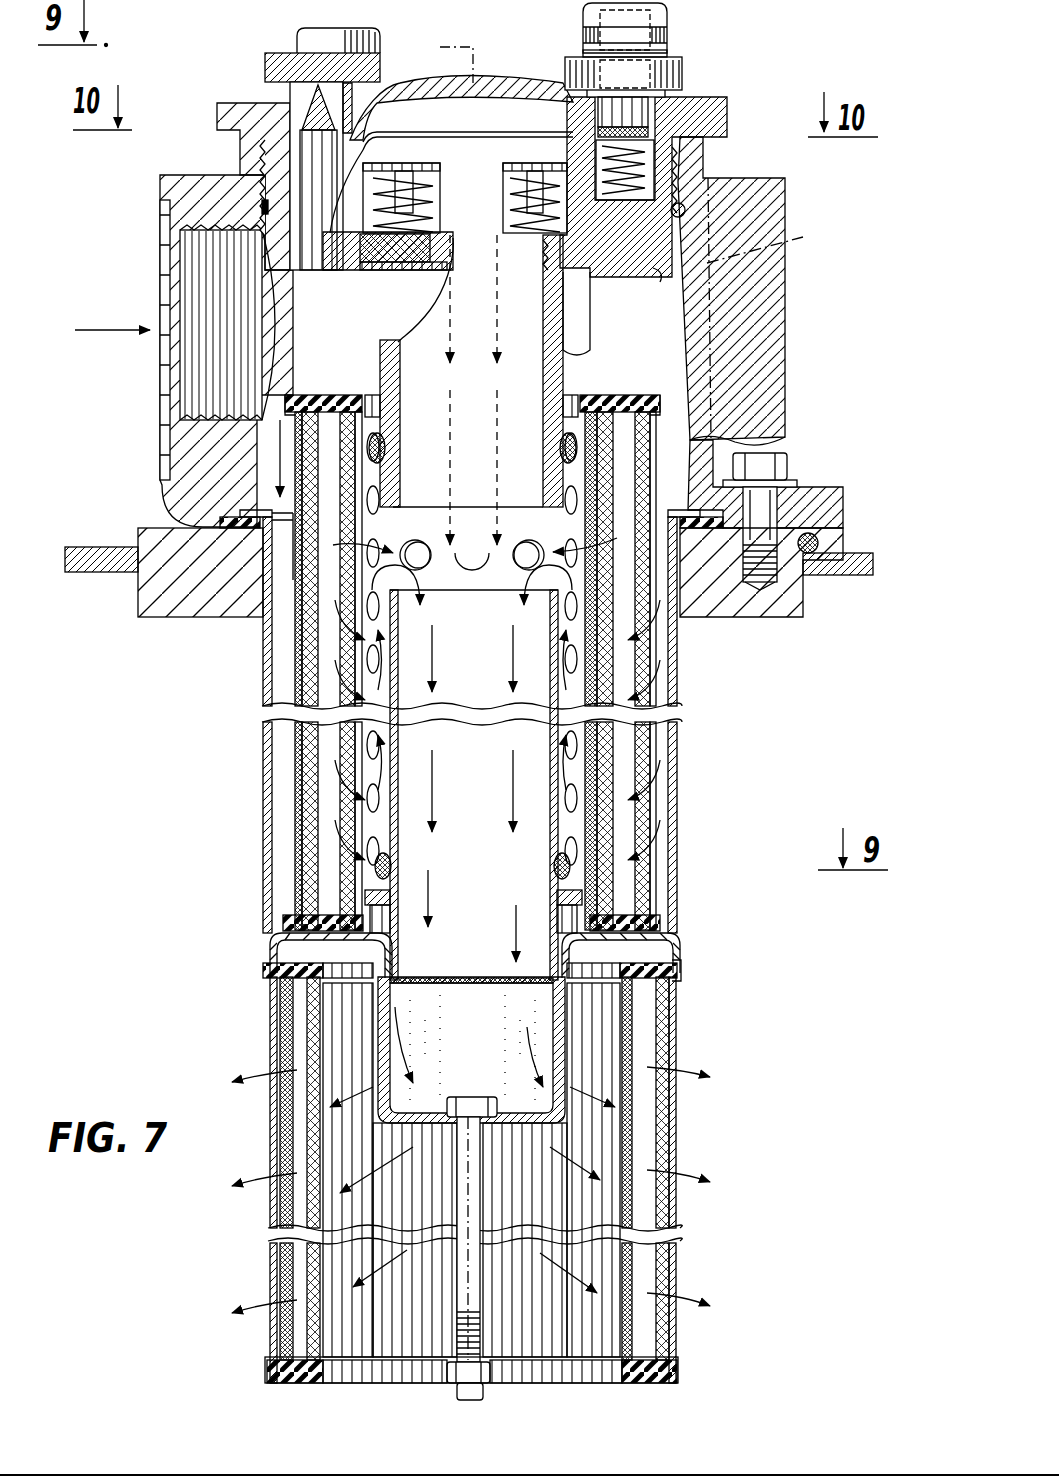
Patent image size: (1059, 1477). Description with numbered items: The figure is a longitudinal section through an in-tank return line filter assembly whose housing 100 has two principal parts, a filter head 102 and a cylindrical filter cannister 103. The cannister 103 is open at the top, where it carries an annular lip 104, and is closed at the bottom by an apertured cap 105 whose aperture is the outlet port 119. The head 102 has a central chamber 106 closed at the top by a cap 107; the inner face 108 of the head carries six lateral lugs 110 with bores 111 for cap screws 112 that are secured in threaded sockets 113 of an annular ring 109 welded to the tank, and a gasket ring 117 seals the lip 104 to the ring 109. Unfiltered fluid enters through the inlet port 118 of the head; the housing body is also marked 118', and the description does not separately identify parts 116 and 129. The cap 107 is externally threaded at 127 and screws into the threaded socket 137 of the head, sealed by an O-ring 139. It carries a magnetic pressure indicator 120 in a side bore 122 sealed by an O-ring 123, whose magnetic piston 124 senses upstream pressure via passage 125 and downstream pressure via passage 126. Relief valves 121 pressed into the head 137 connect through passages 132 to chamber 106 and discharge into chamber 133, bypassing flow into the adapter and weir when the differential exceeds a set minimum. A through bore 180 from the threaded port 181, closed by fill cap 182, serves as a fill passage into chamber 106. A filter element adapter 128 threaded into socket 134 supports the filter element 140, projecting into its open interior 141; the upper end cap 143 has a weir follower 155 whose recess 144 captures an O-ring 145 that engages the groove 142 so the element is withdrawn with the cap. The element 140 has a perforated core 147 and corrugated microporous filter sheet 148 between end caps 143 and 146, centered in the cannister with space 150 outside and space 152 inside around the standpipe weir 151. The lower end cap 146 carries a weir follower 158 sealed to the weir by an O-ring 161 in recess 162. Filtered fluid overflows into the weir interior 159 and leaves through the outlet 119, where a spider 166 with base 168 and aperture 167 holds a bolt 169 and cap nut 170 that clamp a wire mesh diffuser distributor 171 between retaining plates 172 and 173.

The housing 100 is at (150, 217).
The filter head 102 is at (780, 309).
The filter cannister 103 is at (263, 880).
The annular flange or lip 104 is at (235, 520).
The apertured cap 105 is at (272, 950).
The central chamber 106 is at (398, 270).
The cap 107 is at (240, 103).
The inner face 108 is at (797, 545).
The annular ring 109 is at (160, 612).
The lateral lugs 110 is at (765, 488).
The bores 111 is at (768, 518).
The cap screws 112 is at (755, 478).
The threaded sockets 113 is at (770, 583).
The gasket 116 is at (645, 958).
The gasket ring 117 is at (237, 530).
The inlet port 118 is at (172, 322).
The housing body 118' is at (781, 332).
The outlet port 119 is at (471, 1050).
The magnetic pressure indicator 120 is at (672, 18).
The relief valves 121 is at (498, 163).
The side bore 122 is at (595, 150).
The O-ring seal 123 is at (680, 95).
The magnetic piston 124 is at (547, 83).
The passage 125 is at (653, 268).
The passage 126 is at (630, 237).
The external thread 127 is at (267, 172).
The filter element adapter 128 is at (563, 355).
The annular chamber 129 is at (578, 282).
The passages 132 is at (413, 268).
The chamber 133 is at (495, 203).
The socket 134 is at (528, 272).
The threaded socket 137 is at (672, 172).
The O-ring seal 139 is at (683, 210).
The filter element 140 is at (652, 843).
The open interior 141 is at (492, 538).
The external recess 142 is at (545, 555).
The end cap 143 is at (345, 395).
The recess 144 is at (383, 470).
The O-ring 145 is at (387, 452).
The end cap 146 is at (660, 922).
The perforated core 147 is at (355, 815).
The corrugated microporous multilayer filter sheet 148 is at (635, 800).
The space 150 is at (658, 675).
The weir 151 is at (398, 748).
The space 152 is at (562, 752).
The weir follower 155 is at (380, 425).
The weir follower 158 is at (618, 880).
The open interior 159 is at (496, 671).
The O-ring 161 is at (557, 870).
The recess 162 is at (383, 862).
The spider 166 is at (380, 1050).
The central aperture 167 is at (390, 1170).
The base 168 is at (551, 1170).
The bolt 169 is at (460, 1322).
The cap nut 170 is at (490, 1373).
The fluid diffuser distributor 171 is at (580, 1126).
The retaining plate 172 is at (677, 1372).
The retaining plate 173 is at (677, 975).
The through bore 180 is at (357, 148).
The threaded port 181 is at (350, 130).
The fill cap 182 is at (283, 57).